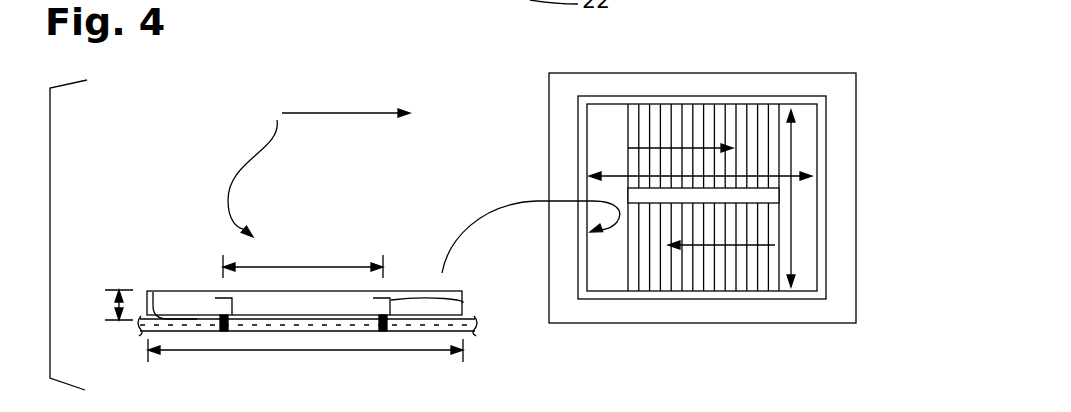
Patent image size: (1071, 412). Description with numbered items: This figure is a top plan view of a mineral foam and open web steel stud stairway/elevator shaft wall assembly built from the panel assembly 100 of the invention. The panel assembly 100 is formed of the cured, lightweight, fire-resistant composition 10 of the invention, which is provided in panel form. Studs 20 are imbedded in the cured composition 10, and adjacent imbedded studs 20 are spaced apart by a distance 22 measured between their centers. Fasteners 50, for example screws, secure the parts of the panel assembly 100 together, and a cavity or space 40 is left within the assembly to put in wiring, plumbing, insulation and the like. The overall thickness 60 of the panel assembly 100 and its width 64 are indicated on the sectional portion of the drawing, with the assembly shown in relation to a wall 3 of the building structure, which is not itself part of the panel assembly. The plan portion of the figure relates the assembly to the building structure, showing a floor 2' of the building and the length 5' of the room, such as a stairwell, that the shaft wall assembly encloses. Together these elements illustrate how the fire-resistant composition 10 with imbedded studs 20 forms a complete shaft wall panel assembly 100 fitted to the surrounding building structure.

The panel assembly 100 is at (319, 167).
The lightweight, fire-resistant composition 10 is at (417, 290).
The stud 20 is at (391, 300).
The distance between centers of adjacent imbedded studs 22 is at (288, 262).
The wall of building structure 3 is at (200, 333).
The cavity or space 40 is at (153, 291).
The fasteners 50 is at (222, 316).
The thickness of the panel assembly 60 is at (112, 306).
The width of the panel assembly 64 is at (322, 355).
The floor of building structure 2' is at (779, 197).
The length of a room 5' is at (766, 218).